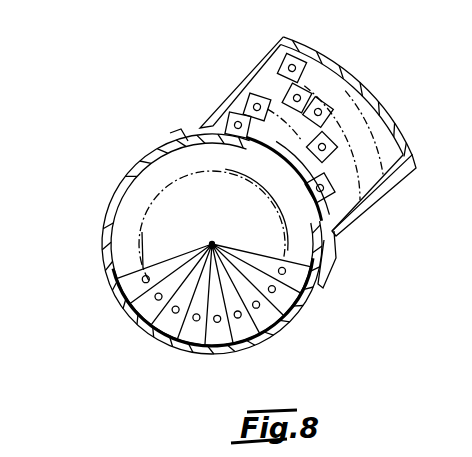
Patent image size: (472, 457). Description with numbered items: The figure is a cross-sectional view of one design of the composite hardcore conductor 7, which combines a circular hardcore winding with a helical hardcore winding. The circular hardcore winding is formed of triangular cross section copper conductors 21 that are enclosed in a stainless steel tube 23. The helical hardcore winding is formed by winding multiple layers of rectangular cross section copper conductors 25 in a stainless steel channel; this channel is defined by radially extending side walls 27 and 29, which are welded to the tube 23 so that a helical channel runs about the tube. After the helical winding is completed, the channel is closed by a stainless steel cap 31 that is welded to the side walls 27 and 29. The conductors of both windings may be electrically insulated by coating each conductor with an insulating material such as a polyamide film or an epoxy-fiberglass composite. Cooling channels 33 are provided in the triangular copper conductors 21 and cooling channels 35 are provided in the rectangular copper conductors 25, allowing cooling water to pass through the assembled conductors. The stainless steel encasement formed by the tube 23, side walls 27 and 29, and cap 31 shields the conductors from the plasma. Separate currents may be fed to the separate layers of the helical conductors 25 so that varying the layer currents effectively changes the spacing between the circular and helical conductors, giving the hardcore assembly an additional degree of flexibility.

The composite hardcore conductor 7 is at (190, 89).
The copper conductors 21 is at (166, 330).
The stainless steel tube 23 is at (102, 249).
The copper conductors 25 is at (307, 89).
The side wall 27 is at (388, 190).
The side wall 29 is at (262, 63).
The stainless steel cap 31 is at (383, 107).
The cooling channels 33 is at (196, 321).
The cooling channels 35 is at (232, 124).